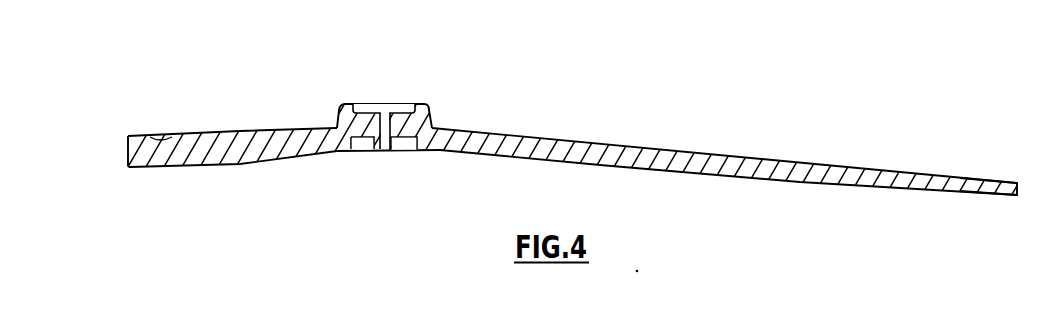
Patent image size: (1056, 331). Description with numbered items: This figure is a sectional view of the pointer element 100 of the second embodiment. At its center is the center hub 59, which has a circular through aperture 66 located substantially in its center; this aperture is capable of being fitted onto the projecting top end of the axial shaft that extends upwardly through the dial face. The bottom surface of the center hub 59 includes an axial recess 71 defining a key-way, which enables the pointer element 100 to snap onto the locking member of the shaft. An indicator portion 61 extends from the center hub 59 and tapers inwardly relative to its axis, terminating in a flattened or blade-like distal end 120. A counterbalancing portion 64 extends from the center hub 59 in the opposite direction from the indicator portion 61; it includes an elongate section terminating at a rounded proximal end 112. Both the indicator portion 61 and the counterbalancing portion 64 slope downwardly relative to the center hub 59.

The pointer element 100 is at (143, 79).
The counterbalancing portion 64 is at (210, 131).
The rounded proximal end 112 is at (166, 167).
The center hub 59 is at (430, 104).
The circular through aperture 66 is at (384, 150).
The axial recess 71 is at (358, 150).
The indicator portion 61 is at (724, 177).
The flattened distal end 120 is at (972, 196).